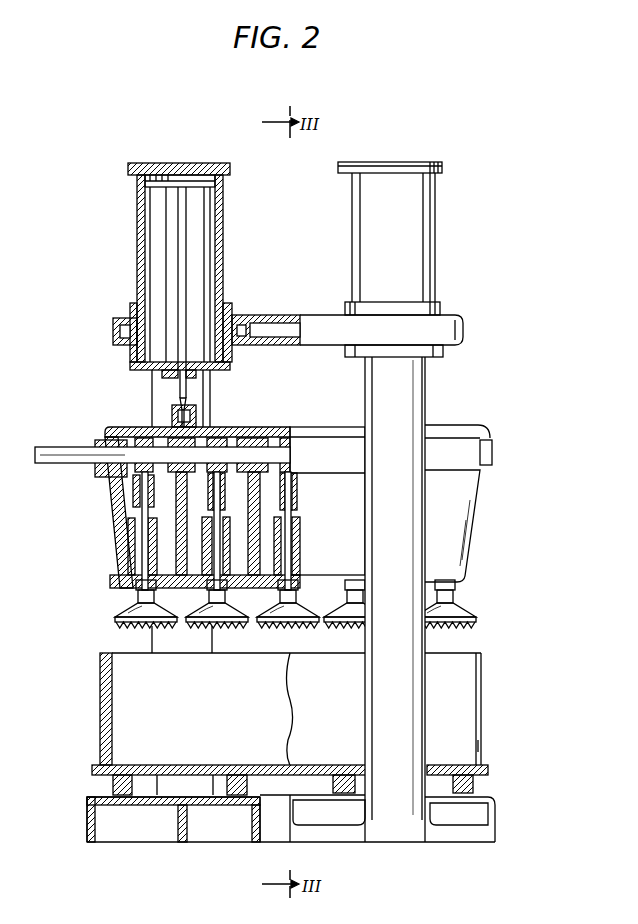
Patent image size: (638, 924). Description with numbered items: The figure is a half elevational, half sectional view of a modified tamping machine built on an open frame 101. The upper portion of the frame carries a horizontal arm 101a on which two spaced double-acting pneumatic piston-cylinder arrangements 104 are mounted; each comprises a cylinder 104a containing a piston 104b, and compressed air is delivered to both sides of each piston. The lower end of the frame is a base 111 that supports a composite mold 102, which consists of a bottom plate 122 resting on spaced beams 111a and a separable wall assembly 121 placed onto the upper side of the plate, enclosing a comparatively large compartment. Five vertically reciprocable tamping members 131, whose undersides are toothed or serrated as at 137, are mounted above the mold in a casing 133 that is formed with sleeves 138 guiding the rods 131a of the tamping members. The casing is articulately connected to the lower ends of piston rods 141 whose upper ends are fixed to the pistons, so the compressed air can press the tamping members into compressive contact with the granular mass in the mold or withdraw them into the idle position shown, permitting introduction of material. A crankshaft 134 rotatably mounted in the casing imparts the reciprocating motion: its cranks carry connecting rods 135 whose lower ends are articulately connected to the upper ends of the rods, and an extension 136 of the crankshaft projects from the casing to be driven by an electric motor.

The open frame 101 is at (205, 413).
The horizontal arm 101a is at (303, 325).
The composite mold 102 is at (488, 744).
The double-acting pneumatic piston-cylinder arrangement 104 is at (133, 257).
The cylinder 104a is at (218, 239).
The piston 104b is at (219, 190).
The base 111 is at (314, 794).
The spaced beams 111a is at (263, 755).
The separable wall assembly 121 is at (103, 710).
The bottom plate 122 is at (131, 770).
The tamping member 131 is at (134, 608).
The rod 131a is at (294, 559).
The casing 133 is at (132, 522).
The crankshaft 134 is at (128, 452).
The connecting rod 135 is at (138, 476).
The extension 136 is at (58, 450).
The serrations 137 is at (127, 626).
The sleeve 138 is at (272, 515).
The piston rod 141 is at (185, 383).